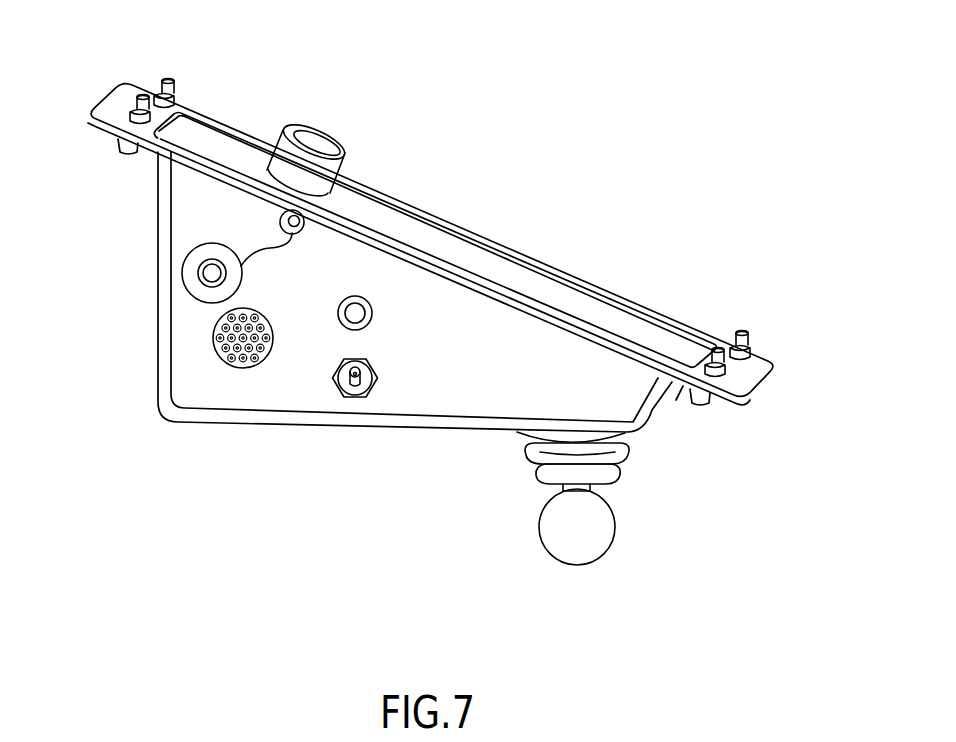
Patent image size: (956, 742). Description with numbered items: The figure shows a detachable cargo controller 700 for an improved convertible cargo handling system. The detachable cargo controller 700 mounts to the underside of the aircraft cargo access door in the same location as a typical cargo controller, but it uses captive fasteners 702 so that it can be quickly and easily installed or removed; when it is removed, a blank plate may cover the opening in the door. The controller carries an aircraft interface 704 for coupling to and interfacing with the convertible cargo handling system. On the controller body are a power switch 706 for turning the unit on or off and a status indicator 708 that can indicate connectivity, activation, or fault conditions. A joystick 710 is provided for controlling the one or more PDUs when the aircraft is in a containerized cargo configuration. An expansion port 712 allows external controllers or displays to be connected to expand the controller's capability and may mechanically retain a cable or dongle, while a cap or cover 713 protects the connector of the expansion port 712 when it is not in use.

The detachable cargo controller 700 is at (537, 143).
The captive fasteners 702 is at (143, 92).
The aircraft interface 704 is at (318, 139).
The power switch 706 is at (368, 395).
The status indicator 708 is at (341, 322).
The joystick 710 is at (614, 503).
The expansion port 712 is at (215, 327).
The cap or cover 713 is at (188, 266).